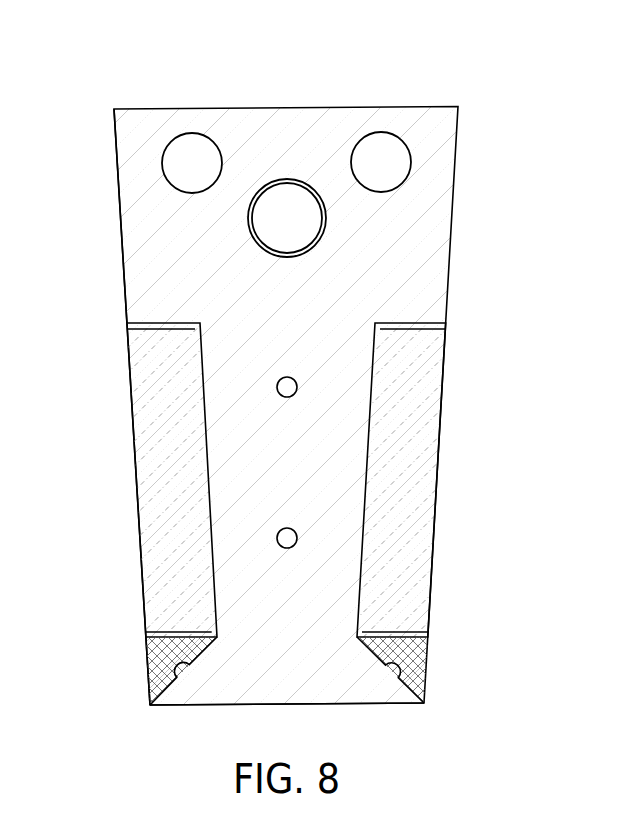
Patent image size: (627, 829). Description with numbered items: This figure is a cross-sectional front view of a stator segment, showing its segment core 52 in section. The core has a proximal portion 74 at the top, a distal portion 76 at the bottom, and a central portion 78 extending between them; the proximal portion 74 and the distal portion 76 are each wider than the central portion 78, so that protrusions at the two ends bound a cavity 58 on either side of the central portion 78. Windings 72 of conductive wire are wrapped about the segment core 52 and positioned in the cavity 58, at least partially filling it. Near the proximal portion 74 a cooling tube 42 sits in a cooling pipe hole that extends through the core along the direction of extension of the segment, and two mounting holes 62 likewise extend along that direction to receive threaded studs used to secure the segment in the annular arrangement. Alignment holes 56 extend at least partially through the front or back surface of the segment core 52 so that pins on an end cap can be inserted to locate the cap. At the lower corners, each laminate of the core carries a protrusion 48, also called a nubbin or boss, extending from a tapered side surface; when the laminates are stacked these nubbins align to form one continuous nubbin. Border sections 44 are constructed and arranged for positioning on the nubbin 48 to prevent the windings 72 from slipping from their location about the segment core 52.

The segment core 52 is at (534, 104).
The mounting holes 62 is at (191, 133).
The cooling tube 42 is at (291, 207).
The proximal portion 74 is at (124, 216).
The alignment holes 56 is at (287, 377).
The cavity 58 is at (413, 330).
The central portion 78 is at (114, 479).
The windings 72 is at (417, 582).
The border sections 44 is at (422, 660).
The protrusion 48 is at (394, 668).
The distal portion 76 is at (190, 706).